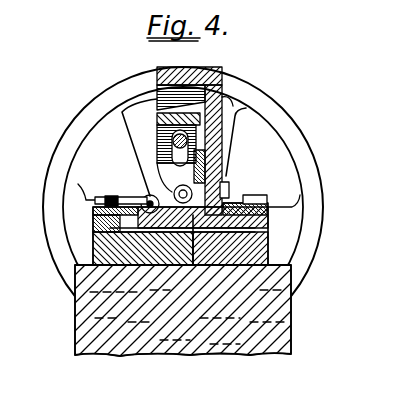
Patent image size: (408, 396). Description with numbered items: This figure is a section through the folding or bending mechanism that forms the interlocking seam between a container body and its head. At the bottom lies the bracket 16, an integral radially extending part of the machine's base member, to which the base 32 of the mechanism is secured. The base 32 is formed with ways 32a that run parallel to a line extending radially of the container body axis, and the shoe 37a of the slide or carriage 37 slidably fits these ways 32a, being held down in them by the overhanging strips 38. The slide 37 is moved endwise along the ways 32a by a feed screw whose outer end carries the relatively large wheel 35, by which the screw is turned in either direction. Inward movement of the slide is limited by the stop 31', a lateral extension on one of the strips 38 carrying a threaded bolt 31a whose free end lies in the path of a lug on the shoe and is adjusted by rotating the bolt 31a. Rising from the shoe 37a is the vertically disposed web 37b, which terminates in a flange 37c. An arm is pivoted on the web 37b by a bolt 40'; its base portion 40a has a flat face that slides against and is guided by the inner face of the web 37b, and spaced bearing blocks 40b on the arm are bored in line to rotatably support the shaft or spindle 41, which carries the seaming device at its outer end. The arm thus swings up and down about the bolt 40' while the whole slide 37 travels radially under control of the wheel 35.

The bracket 16 is at (98, 353).
The bolt 31a is at (147, 197).
The stop 31' is at (118, 194).
The base 32 is at (273, 246).
The ways 32a is at (118, 220).
The wheel 35 is at (277, 105).
The slide or carriage 37 is at (232, 156).
The shoe 37a is at (272, 258).
The web 37b is at (216, 168).
The flange 37c is at (184, 67).
The overhanging strips 38 is at (278, 193).
The base portion 40a is at (222, 148).
The bearing blocks 40b is at (205, 176).
The bolt 40' is at (237, 191).
The shaft or spindle 41 is at (172, 166).